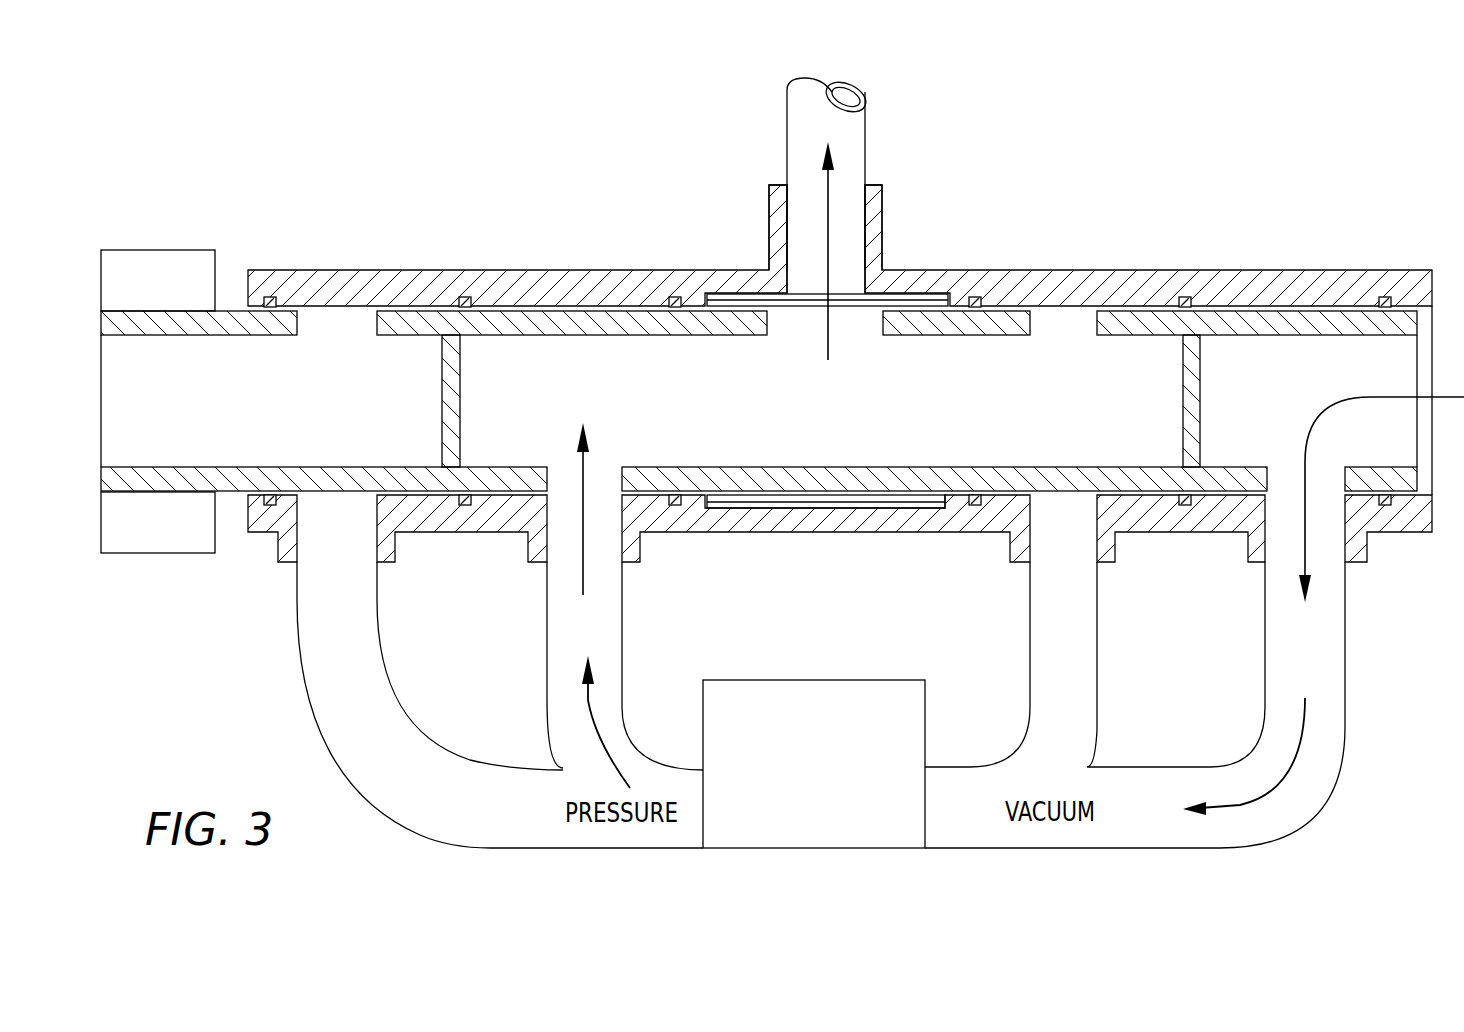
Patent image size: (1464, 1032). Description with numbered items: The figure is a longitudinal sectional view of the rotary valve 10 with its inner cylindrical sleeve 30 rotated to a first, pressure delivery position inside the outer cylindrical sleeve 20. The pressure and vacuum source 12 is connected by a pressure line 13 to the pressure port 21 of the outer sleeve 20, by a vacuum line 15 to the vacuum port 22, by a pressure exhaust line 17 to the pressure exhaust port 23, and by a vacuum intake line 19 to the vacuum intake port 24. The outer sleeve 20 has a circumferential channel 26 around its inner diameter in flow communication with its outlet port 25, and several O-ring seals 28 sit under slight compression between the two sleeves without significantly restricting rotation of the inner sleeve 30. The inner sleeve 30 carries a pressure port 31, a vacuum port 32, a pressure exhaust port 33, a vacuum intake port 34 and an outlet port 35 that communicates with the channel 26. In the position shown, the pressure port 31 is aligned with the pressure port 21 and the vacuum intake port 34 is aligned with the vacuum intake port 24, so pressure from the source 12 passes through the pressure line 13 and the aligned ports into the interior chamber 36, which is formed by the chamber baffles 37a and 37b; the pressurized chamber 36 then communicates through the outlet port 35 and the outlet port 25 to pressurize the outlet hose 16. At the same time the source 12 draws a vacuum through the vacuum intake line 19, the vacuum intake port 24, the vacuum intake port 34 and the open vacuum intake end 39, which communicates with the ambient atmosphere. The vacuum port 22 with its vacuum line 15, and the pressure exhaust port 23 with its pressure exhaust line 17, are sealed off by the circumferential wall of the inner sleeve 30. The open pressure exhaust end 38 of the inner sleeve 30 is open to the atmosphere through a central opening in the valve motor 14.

The rotary valve 10 is at (445, 163).
The pressure and vacuum source 12 is at (799, 786).
The pressure line 13 is at (547, 647).
The valve motor 14 is at (163, 270).
The vacuum line 15 is at (1097, 642).
The outlet hose 16 is at (850, 157).
The pressure exhaust line 17 is at (302, 683).
The vacuum intake line 19 is at (1347, 680).
The outer cylindrical sleeve 20 is at (1085, 276).
The pressure port 21 is at (603, 556).
The vacuum port 22 is at (1042, 552).
The pressure exhaust port 23 is at (316, 552).
The vacuum intake port 24 is at (1325, 552).
The outlet port 25 is at (853, 240).
The circumferential channel 26 is at (735, 297).
The O-ring seals 28 is at (274, 300).
The inner cylindrical sleeve 30 is at (232, 316).
The pressure port 31 is at (613, 470).
The vacuum port 32 is at (1047, 332).
The pressure exhaust port 33 is at (341, 332).
The vacuum intake port 34 is at (1283, 474).
The outlet port 35 is at (768, 326).
The interior chamber 36 is at (880, 420).
The chamber baffle 37a is at (462, 383).
The chamber baffle 37b is at (1182, 403).
The open pressure exhaust end 38 is at (242, 418).
The open vacuum intake end 39 is at (1230, 418).